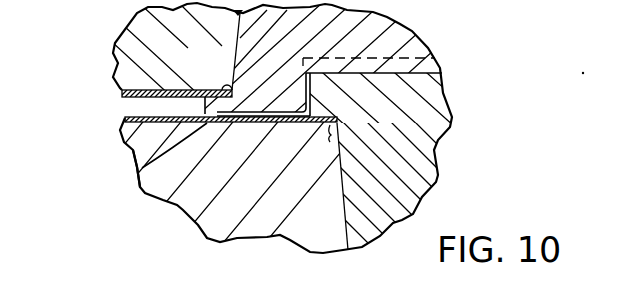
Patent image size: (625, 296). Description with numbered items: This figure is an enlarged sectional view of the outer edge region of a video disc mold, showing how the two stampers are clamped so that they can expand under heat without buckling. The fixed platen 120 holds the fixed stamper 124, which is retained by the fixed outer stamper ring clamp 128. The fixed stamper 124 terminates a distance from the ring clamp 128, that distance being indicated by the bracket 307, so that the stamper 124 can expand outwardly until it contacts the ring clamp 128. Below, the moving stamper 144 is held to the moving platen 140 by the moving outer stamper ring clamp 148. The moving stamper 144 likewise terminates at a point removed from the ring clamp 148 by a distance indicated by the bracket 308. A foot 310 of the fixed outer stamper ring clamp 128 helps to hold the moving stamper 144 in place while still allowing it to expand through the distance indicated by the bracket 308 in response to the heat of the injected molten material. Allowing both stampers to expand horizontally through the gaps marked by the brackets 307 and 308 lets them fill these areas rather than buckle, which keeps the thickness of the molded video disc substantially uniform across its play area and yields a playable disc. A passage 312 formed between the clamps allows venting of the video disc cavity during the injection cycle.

The fixed platen 120 is at (142, 32).
The fixed stamper 124 is at (124, 96).
The fixed outer stamper ring clamp 128 is at (410, 33).
The passage 312 is at (436, 60).
The moving outer stamper ring clamp 148 is at (440, 139).
The moving stamper 144 is at (125, 118).
The moving platen 140 is at (178, 216).
The foot 310 is at (142, 166).
The bracket 307 is at (228, 89).
The bracket 308 is at (340, 160).